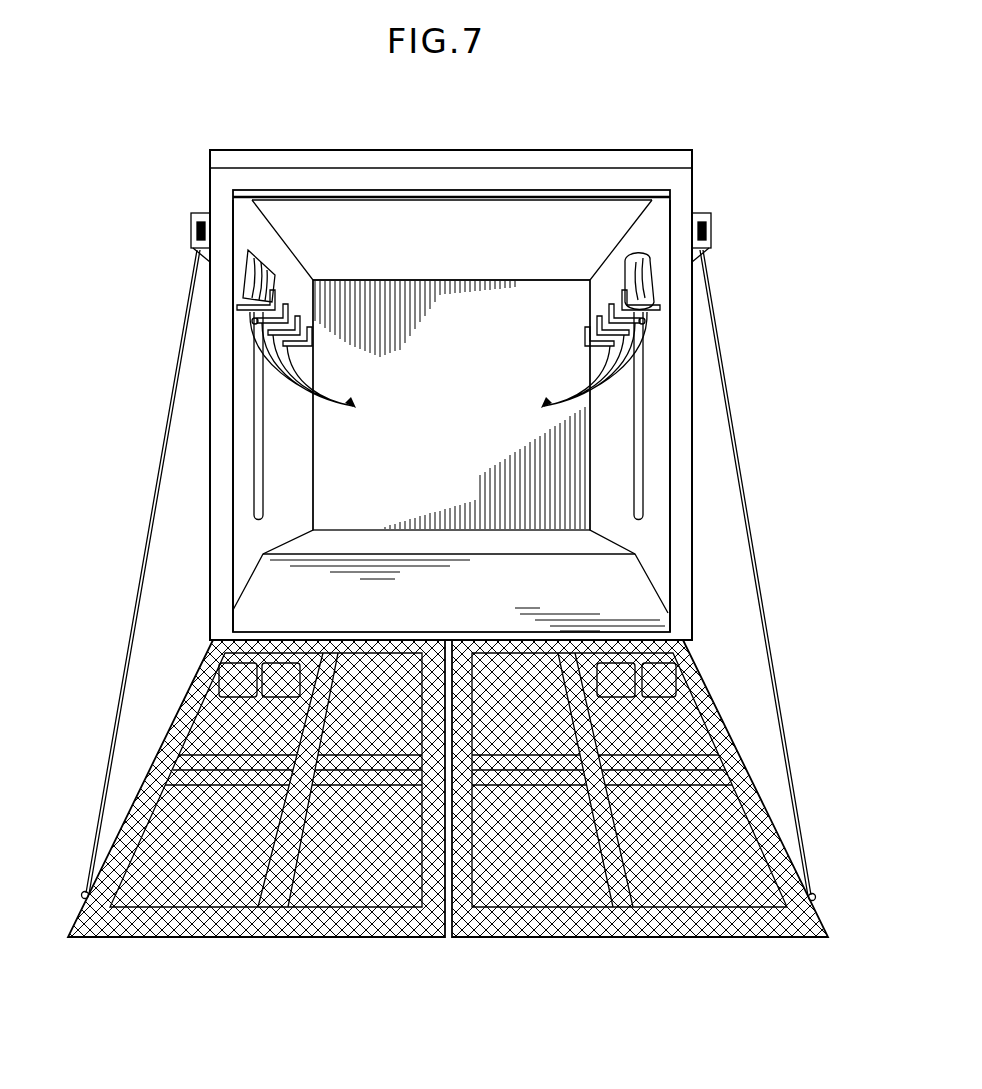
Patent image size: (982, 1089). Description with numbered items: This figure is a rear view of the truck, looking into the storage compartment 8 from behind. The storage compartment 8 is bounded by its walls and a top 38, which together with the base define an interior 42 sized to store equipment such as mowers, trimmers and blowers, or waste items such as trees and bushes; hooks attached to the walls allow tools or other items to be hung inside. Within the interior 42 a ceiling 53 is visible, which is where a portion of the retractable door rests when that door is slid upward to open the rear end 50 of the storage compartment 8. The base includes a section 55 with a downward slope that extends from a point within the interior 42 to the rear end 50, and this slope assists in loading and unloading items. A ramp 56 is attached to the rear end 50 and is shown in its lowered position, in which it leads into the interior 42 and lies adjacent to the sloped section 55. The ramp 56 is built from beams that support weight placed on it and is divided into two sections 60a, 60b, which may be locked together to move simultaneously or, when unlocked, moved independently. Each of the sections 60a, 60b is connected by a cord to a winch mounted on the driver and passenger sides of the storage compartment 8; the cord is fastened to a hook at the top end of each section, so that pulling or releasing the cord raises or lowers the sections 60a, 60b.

The storage compartment 8 is at (447, 365).
The top 38 is at (508, 152).
The interior 42 is at (597, 437).
The rear end 50 is at (682, 192).
The ceiling 53 is at (543, 248).
The section 55 is at (630, 600).
The ramp 56 is at (455, 819).
The section 60a is at (256, 824).
The section 60b is at (640, 820).